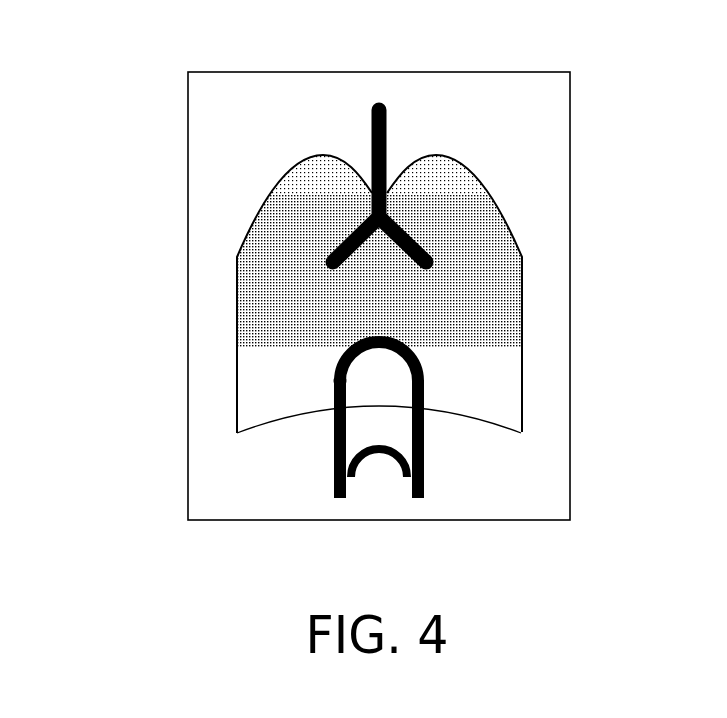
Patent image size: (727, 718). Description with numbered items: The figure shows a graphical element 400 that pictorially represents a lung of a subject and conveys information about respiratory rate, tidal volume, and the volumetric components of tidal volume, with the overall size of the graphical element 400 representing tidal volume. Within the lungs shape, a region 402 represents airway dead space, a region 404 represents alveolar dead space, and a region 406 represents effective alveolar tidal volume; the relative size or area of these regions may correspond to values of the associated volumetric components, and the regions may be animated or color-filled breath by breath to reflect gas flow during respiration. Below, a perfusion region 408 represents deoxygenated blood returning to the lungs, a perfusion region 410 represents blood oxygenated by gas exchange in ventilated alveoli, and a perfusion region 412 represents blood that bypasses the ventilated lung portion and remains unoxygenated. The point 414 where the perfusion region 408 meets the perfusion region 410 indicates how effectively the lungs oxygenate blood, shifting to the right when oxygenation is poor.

The graphical element 400 is at (139, 97).
The region 402 is at (388, 153).
The region 404 is at (460, 184).
The region 406 is at (507, 283).
The perfusion region 408 is at (334, 448).
The perfusion region 410 is at (426, 435).
The perfusion region 412 is at (380, 447).
The point 414 is at (333, 377).